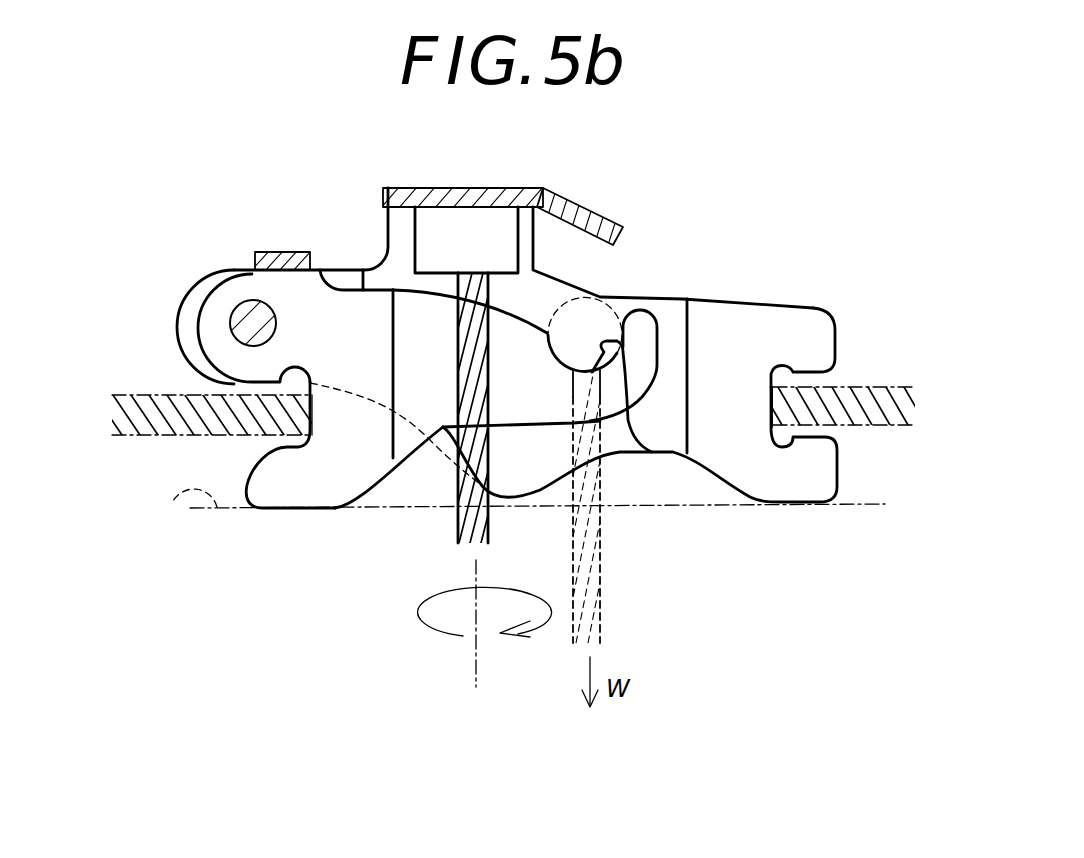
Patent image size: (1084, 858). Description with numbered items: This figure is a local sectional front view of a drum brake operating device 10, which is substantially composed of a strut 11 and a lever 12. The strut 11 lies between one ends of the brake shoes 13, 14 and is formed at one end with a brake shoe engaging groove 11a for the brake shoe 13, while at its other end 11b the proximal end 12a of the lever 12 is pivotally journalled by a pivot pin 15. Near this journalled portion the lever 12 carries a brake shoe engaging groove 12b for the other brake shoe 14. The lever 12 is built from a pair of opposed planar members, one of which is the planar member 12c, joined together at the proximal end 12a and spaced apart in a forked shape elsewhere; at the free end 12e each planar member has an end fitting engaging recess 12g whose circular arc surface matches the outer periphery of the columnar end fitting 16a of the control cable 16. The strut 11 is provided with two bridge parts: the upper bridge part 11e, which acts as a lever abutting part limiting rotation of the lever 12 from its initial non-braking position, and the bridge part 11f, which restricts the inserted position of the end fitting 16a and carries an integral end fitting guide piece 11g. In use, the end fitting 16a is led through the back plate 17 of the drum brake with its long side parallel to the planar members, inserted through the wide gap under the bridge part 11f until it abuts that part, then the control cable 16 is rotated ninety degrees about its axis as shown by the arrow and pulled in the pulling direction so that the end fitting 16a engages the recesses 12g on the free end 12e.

The drum brake operating device 10 is at (217, 263).
The strut 11 is at (676, 284).
The brake shoe engaging groove 11a is at (795, 370).
The other end of the strut 11b is at (178, 330).
The upper bridge part 11e is at (290, 252).
The bridge part 11f is at (413, 186).
The end fitting guide piece 11g is at (597, 215).
The lever 12 is at (382, 496).
The proximal end of the lever 12a is at (203, 350).
The brake shoe engaging groove 12b is at (298, 440).
The planar member 12c is at (410, 435).
The free end of the lever 12e is at (640, 315).
The end fitting engaging recess 12g is at (608, 350).
The brake shoe 13 is at (883, 384).
The brake shoe 14 is at (145, 435).
The pivot pin 15 is at (238, 322).
The control cable 16 is at (505, 512).
The end fitting 16a is at (468, 230).
The back plate 17 is at (172, 503).